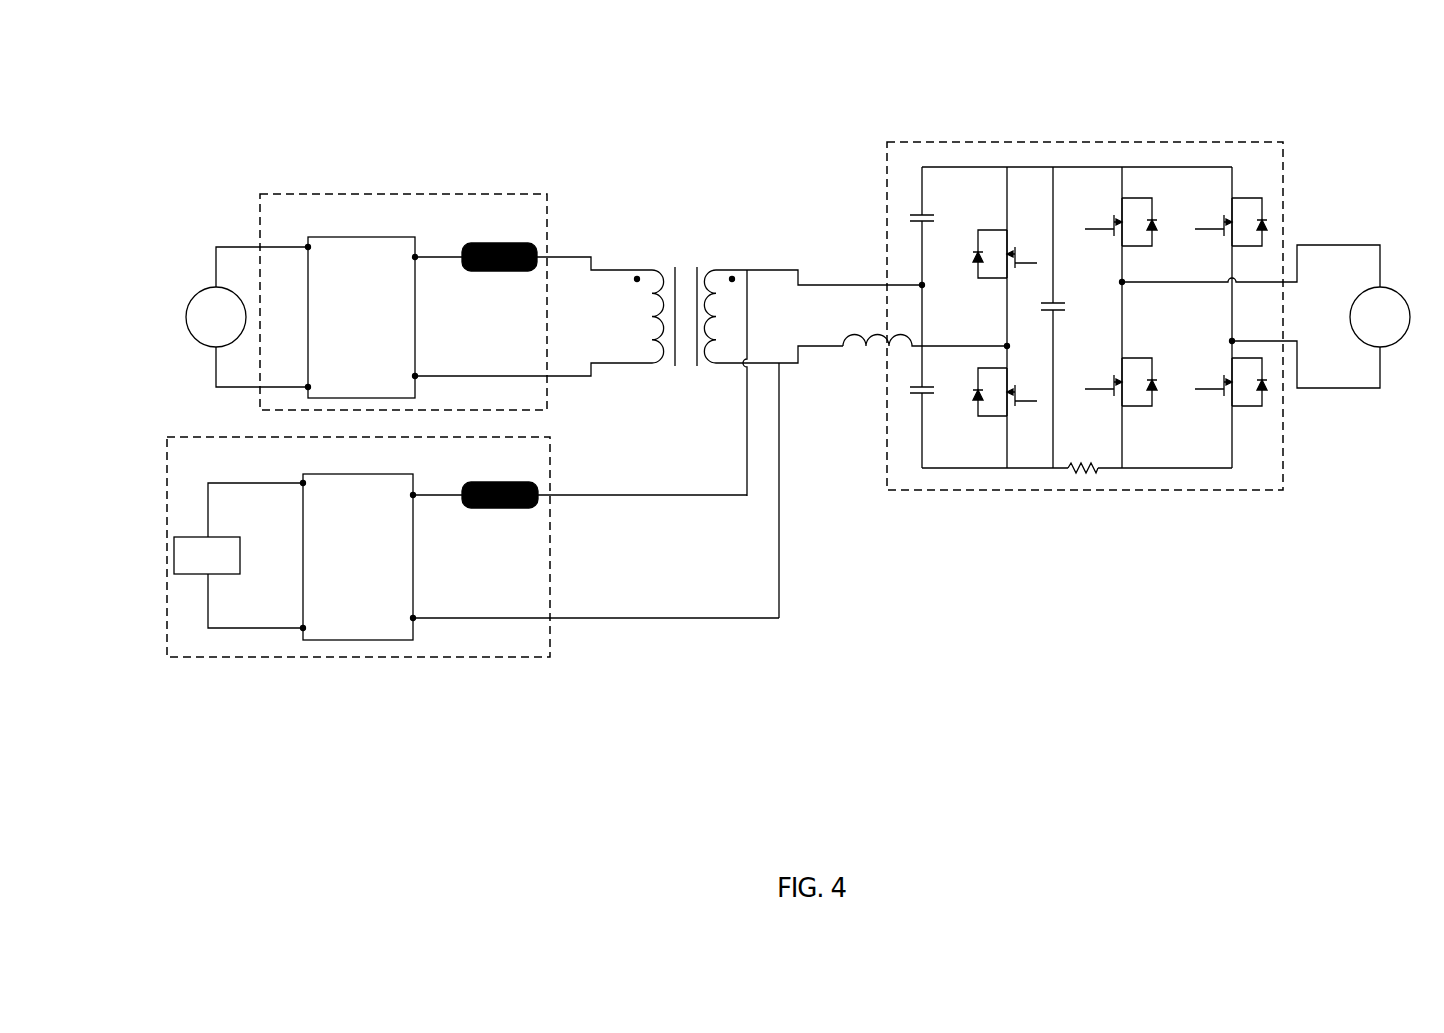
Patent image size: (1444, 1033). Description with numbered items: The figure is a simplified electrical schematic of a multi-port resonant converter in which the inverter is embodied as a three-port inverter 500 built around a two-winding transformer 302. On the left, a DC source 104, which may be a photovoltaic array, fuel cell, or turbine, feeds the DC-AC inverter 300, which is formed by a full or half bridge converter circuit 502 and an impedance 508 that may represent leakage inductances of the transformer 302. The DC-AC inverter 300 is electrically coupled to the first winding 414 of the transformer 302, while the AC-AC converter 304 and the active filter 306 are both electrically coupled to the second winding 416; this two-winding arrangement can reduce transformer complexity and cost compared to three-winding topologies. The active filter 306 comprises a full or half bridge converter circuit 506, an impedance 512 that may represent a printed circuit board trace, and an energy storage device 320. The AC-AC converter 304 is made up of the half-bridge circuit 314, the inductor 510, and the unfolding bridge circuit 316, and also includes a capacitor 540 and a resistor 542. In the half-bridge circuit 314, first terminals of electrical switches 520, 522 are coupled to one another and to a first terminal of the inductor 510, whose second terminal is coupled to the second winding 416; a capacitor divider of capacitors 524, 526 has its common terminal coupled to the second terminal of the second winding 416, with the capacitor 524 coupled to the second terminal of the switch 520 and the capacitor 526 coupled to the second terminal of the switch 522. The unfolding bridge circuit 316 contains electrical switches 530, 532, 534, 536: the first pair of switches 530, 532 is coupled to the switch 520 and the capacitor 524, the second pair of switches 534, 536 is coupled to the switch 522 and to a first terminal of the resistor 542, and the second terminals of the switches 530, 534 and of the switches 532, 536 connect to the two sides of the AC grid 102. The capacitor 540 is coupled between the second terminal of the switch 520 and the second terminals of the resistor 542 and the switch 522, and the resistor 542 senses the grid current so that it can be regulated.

The three-port inverter 500 is at (778, 64).
The DC-AC inverter 300 is at (425, 194).
The two-winding transformer 302 is at (682, 232).
The AC-AC converter 304 is at (1150, 141).
The active filter 306 is at (290, 657).
The half-bridge circuit 314 is at (977, 475).
The unfolding bridge circuit 316 is at (1168, 475).
The DC source 104 is at (200, 292).
The AC grid 102 is at (1395, 298).
The converter circuit 502 is at (345, 237).
The impedance 508 is at (511, 243).
The converter circuit 506 is at (377, 474).
The impedance 512 is at (507, 482).
The energy storage device 320 is at (218, 537).
The first winding 414 is at (662, 366).
The second winding 416 is at (706, 366).
The inductor 510 is at (866, 343).
The electrical switch 520 is at (1005, 249).
The electrical switch 522 is at (1005, 386).
The capacitor 524 is at (931, 226).
The capacitor 526 is at (931, 376).
The electrical switch 530 is at (1121, 218).
The electrical switch 532 is at (1231, 218).
The electrical switch 534 is at (1121, 378).
The electrical switch 536 is at (1231, 378).
The capacitor 540 is at (1063, 317).
The resistor 542 is at (1083, 458).